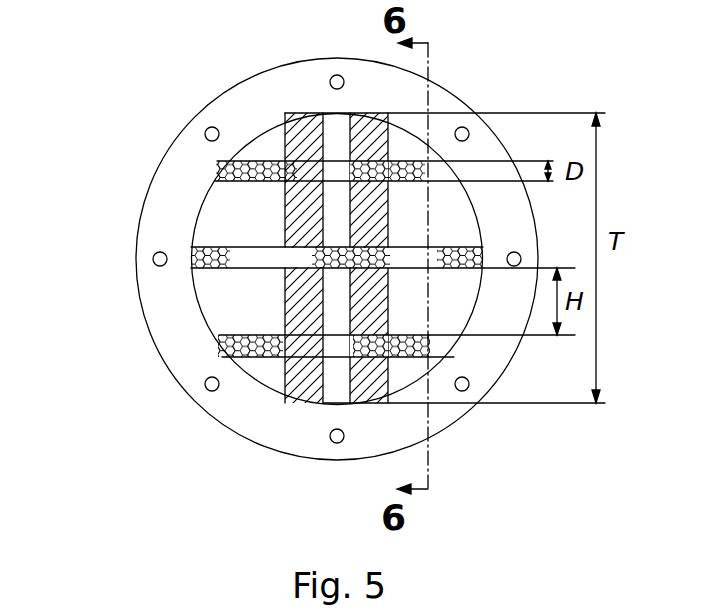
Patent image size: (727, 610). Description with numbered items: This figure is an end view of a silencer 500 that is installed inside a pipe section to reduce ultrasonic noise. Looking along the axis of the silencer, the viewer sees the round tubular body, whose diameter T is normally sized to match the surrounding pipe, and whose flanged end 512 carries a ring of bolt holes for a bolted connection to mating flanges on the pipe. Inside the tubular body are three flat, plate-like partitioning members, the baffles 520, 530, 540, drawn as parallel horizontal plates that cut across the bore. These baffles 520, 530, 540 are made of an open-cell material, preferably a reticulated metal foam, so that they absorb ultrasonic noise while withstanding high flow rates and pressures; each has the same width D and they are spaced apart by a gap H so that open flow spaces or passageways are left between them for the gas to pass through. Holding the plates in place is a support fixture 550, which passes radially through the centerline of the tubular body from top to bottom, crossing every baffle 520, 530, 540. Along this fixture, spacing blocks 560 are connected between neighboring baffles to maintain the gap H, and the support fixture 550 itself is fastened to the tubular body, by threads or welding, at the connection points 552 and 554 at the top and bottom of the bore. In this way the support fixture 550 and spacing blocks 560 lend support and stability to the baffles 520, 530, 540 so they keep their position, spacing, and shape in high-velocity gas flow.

The silencer 500 is at (146, 52).
The flanged end 512 is at (263, 92).
The baffle 520 is at (213, 347).
The baffle 530 is at (192, 258).
The baffle 540 is at (227, 170).
The support fixture 550 is at (191, 267).
The connection point 552 is at (328, 112).
The connection point 554 is at (332, 405).
The spacing block 560 is at (307, 148).